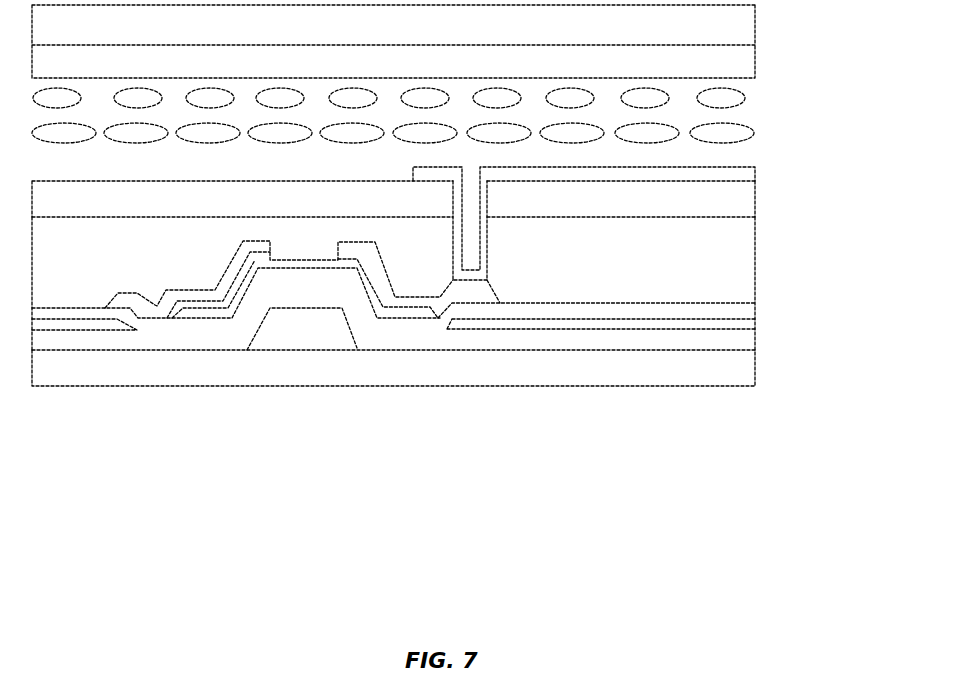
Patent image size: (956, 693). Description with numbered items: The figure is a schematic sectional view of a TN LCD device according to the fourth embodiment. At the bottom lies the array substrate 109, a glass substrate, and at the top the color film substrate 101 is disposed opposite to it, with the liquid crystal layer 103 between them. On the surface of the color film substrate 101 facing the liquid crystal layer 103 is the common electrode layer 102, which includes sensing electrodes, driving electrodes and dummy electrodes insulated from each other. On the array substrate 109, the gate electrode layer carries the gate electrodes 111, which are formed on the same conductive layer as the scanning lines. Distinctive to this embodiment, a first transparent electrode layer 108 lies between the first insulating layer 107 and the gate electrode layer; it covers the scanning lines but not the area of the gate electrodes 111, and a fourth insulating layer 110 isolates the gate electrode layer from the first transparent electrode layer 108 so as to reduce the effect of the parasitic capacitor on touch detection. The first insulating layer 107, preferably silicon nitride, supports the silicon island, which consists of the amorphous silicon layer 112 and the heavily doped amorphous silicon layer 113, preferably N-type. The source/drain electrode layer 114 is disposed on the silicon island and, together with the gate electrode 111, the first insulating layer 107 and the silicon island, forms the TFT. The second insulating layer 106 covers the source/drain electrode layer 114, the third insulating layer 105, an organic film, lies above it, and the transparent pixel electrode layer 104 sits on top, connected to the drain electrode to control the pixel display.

The color film substrate 101 is at (740, 22).
The common electrode layer 102 is at (740, 62).
The liquid crystal layer 103 is at (745, 103).
The pixel electrode layer 104 is at (740, 172).
The third insulating layer 105 is at (740, 207).
The second insulating layer 106 is at (740, 242).
The first insulating layer 107 is at (745, 305).
The first transparent electrode layer 108 is at (740, 322).
The array substrate 109 is at (740, 368).
The fourth insulating layer 110 is at (459, 344).
The gate electrode 111 is at (302, 334).
The amorphous silicon layer 112 is at (212, 322).
The heavily doped amorphous silicon layer 113 is at (190, 312).
The source/drain electrode layer 114 is at (155, 314).